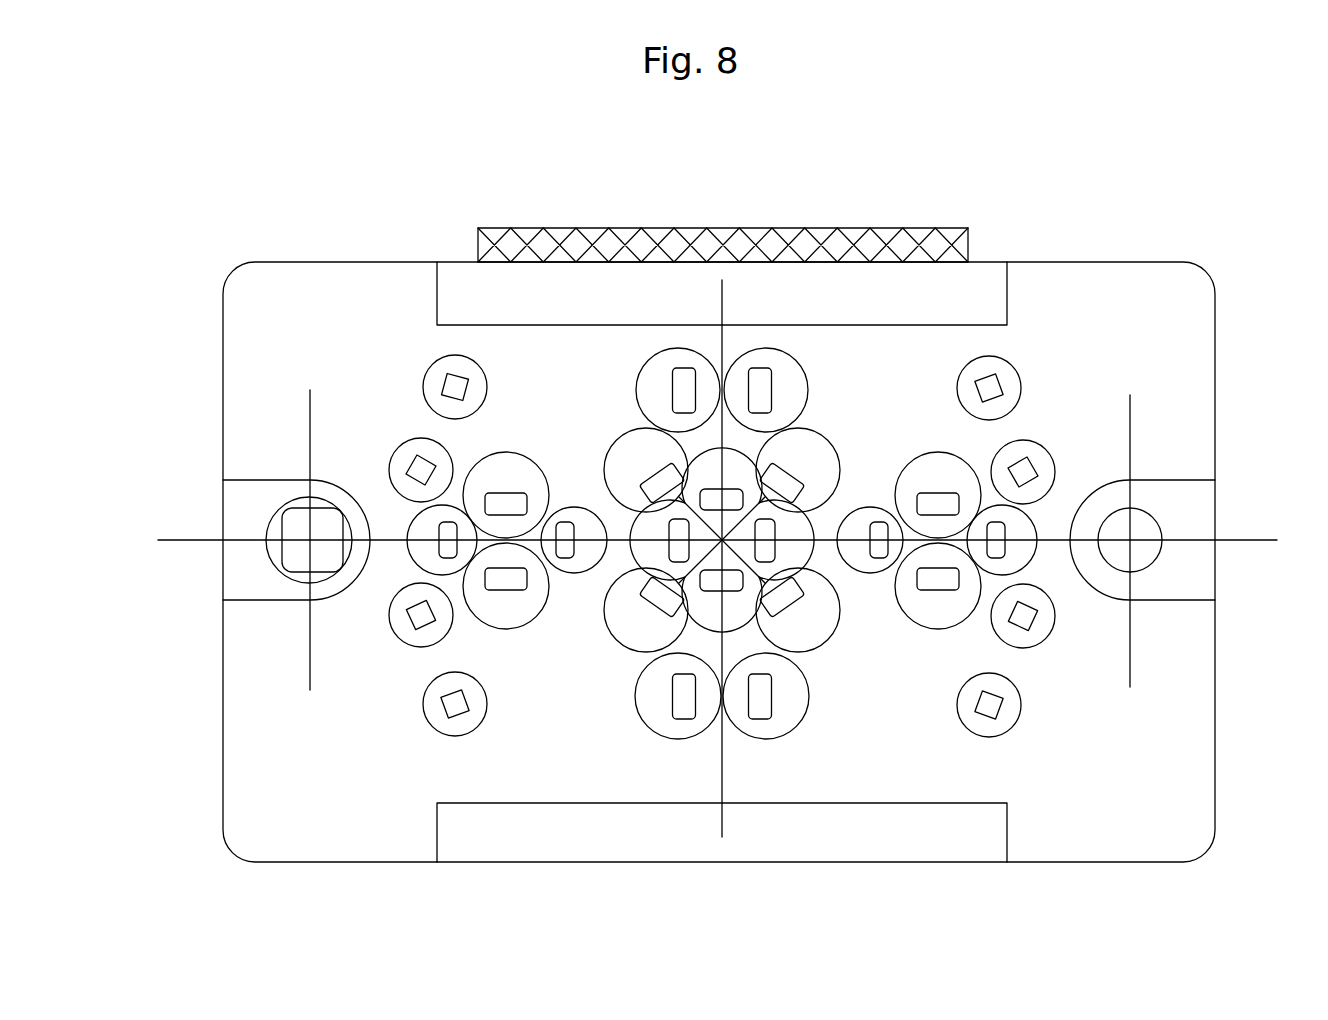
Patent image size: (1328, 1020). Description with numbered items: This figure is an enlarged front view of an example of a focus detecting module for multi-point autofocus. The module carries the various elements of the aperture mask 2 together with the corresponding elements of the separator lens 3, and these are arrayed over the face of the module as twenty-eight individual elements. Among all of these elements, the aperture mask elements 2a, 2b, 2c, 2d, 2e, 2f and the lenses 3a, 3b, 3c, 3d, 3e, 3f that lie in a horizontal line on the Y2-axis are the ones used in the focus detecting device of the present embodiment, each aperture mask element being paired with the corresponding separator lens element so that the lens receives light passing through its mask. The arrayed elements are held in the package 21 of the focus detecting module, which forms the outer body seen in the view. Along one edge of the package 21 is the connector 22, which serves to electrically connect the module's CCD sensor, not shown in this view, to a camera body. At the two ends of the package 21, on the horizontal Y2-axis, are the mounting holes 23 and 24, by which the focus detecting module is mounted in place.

The aperture mask 2 is at (658, 727).
The separator lens 3 is at (804, 753).
The aperture mask 2a is at (447, 522).
The aperture mask 2b is at (558, 522).
The aperture mask 2c is at (669, 533).
The aperture mask 2d is at (775, 533).
The aperture mask 2e is at (880, 522).
The aperture mask 2f is at (994, 522).
The lens 3a is at (409, 562).
The lens 3b is at (564, 566).
The lens 3c is at (633, 555).
The lens 3d is at (812, 555).
The lens 3e is at (880, 574).
The lens 3f is at (1033, 568).
The package 21 is at (1081, 845).
The connector 22 is at (782, 228).
The mounting hole 23 is at (1146, 514).
The mounting hole 24 is at (298, 510).
The Y2-axis Y2 is at (1253, 543).